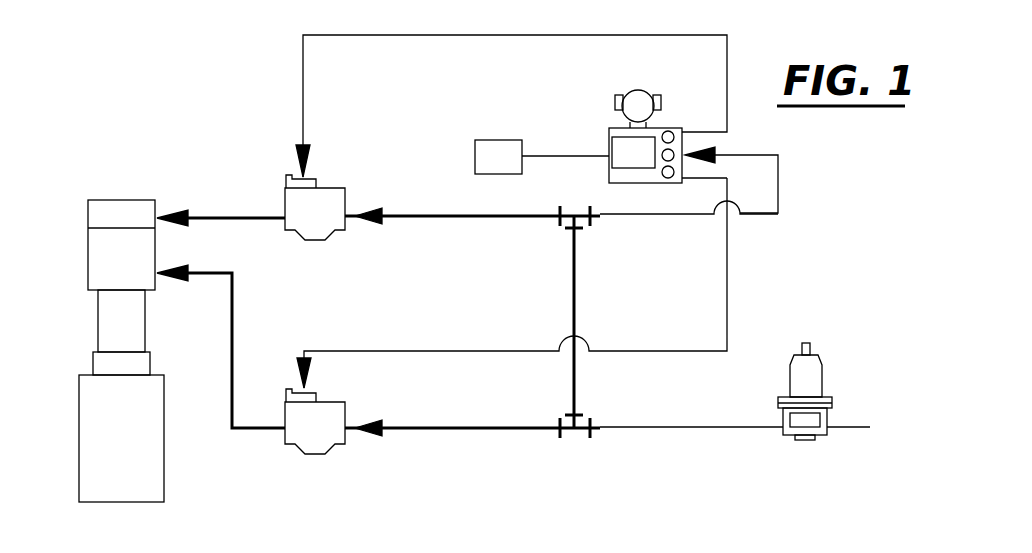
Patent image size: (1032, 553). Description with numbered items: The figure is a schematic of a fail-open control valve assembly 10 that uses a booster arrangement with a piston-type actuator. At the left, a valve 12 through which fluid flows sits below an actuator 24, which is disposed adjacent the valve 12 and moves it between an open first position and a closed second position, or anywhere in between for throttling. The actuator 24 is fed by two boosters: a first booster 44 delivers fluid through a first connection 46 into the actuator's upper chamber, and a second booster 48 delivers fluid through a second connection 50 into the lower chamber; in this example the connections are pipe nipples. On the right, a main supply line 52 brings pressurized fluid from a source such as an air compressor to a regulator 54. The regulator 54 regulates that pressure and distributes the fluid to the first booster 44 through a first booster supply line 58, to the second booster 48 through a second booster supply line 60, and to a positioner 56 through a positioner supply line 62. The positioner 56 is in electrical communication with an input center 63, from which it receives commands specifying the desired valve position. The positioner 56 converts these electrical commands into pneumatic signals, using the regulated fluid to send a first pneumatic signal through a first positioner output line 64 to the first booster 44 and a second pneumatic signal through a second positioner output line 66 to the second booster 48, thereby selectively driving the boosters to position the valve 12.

The control valve assembly 10 is at (193, 130).
The valve 12 is at (79, 433).
The actuator 24 is at (88, 283).
The first booster 44 is at (332, 186).
The first connection 46 is at (240, 220).
The second booster 48 is at (333, 400).
The second connection 50 is at (232, 343).
The main supply line 52 is at (850, 428).
The regulator 54 is at (822, 375).
The positioner 56 is at (604, 134).
The first booster supply line 58 is at (490, 220).
The second booster supply line 60 is at (452, 431).
The positioner supply line 62 is at (779, 201).
The input center 63 is at (487, 140).
The first positioner output line 64 is at (303, 33).
The second positioner output line 66 is at (458, 351).